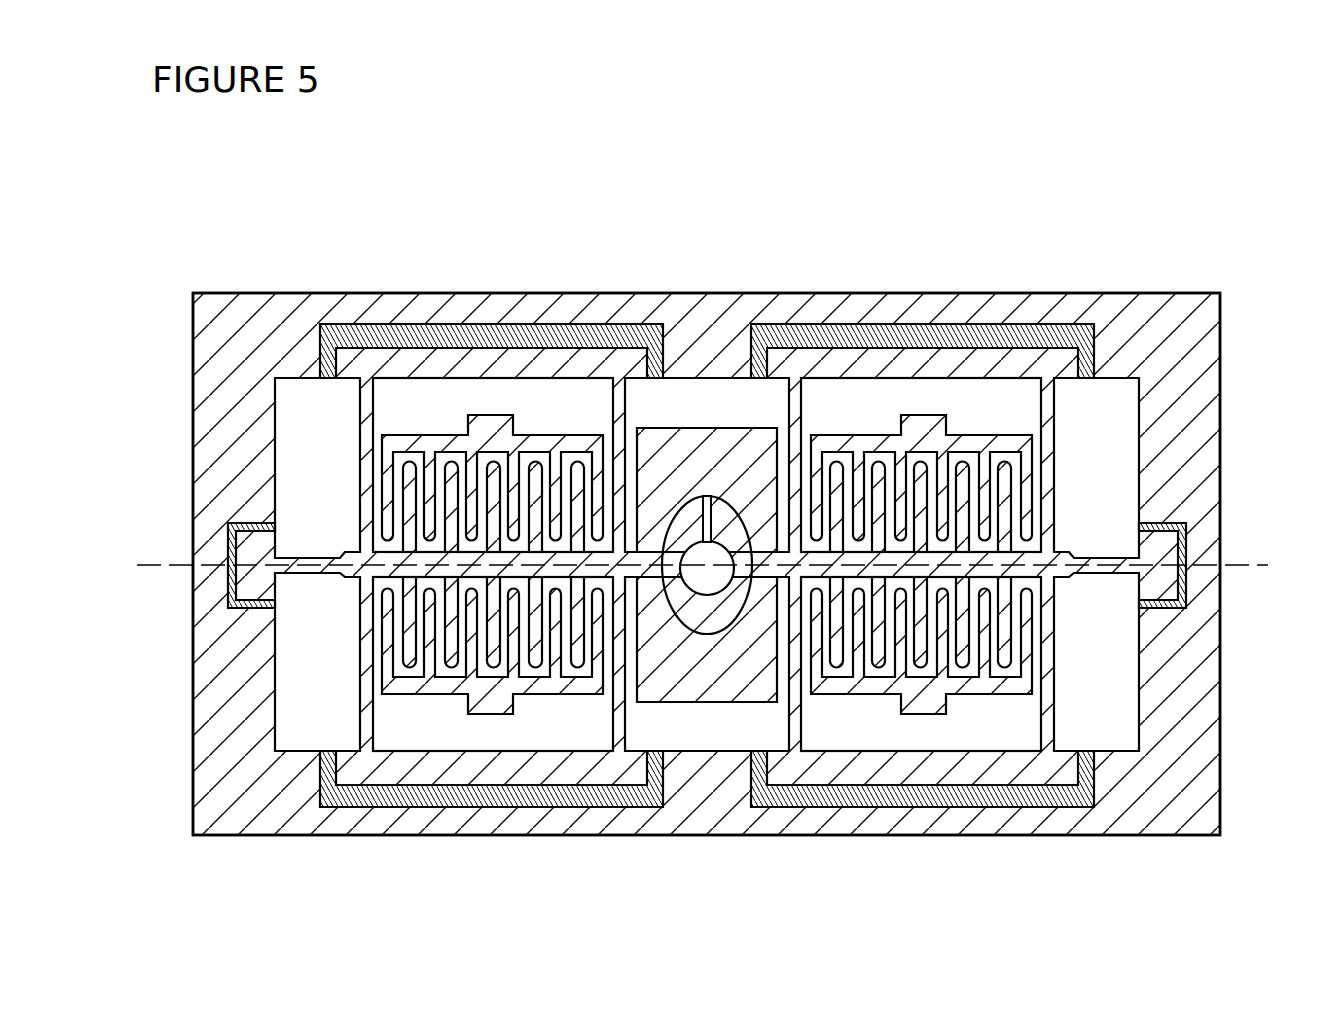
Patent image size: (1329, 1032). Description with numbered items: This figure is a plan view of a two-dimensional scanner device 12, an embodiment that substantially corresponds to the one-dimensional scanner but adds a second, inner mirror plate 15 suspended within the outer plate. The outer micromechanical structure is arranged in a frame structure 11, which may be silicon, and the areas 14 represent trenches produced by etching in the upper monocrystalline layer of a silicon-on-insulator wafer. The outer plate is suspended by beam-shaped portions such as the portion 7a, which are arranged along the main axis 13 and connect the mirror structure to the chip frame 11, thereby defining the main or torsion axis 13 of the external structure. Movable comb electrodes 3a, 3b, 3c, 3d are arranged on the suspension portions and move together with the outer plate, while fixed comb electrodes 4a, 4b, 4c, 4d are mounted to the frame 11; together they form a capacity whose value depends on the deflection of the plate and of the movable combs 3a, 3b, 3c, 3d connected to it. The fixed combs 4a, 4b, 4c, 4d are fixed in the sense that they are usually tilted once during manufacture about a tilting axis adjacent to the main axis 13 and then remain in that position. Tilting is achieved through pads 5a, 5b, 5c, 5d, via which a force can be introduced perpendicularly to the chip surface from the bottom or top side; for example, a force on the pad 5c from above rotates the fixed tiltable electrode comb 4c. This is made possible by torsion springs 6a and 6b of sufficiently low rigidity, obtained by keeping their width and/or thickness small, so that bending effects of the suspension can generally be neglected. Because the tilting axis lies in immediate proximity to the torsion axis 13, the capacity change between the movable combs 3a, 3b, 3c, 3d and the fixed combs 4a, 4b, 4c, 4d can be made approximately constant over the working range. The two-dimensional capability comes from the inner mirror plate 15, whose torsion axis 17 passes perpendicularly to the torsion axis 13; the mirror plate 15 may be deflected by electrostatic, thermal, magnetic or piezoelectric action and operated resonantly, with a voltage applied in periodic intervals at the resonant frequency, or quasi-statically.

The movable comb electrode 3a is at (405, 462).
The movable comb electrode 3b is at (860, 455).
The movable comb electrode 3c is at (576, 652).
The movable comb electrode 3d is at (985, 660).
The fixed comb electrode 4a is at (528, 445).
The fixed comb electrode 4b is at (985, 450).
The fixed comb electrode 4c is at (555, 652).
The fixed comb electrode 4d is at (875, 692).
The pad 5a is at (490, 415).
The pad 5b is at (920, 415).
The pad 5c is at (487, 718).
The pad 5d is at (915, 718).
The torsion spring 6a is at (368, 586).
The torsion spring 6b is at (617, 600).
The beam-shaped portion 7a is at (325, 553).
The frame structure 11 is at (1168, 318).
The scanner device 12 is at (858, 197).
The main axis 13 is at (720, 552).
The trench 14 is at (1115, 455).
The mirror plate 15 is at (712, 543).
The torsion axis 17 is at (698, 496).